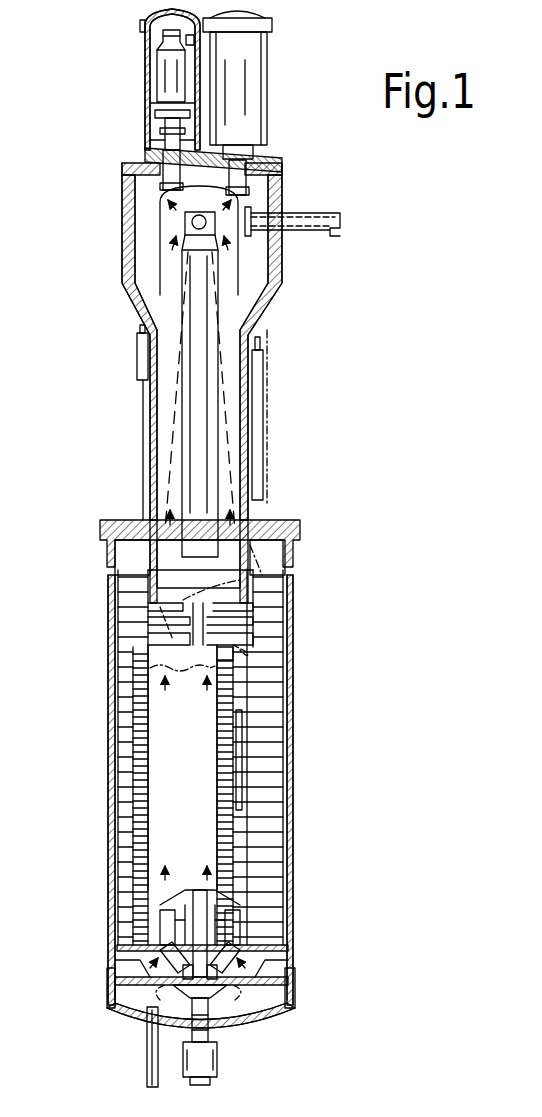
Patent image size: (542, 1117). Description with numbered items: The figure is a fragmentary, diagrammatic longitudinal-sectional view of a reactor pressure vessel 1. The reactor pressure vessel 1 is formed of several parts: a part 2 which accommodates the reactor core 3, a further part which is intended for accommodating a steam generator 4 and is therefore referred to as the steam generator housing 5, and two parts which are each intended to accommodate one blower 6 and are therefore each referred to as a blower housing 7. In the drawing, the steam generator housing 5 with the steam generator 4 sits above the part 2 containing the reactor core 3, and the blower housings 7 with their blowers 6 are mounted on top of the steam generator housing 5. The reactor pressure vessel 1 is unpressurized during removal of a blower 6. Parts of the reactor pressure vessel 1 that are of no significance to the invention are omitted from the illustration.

The reactor pressure vessel 1 is at (82, 558).
The part for accommodating a reactor core 2 is at (292, 682).
The reactor core 3 is at (167, 738).
The steam generator 4 is at (228, 287).
The steam generator housing 5 is at (257, 307).
The blower 6 is at (172, 80).
The blower housing 7 is at (145, 45).